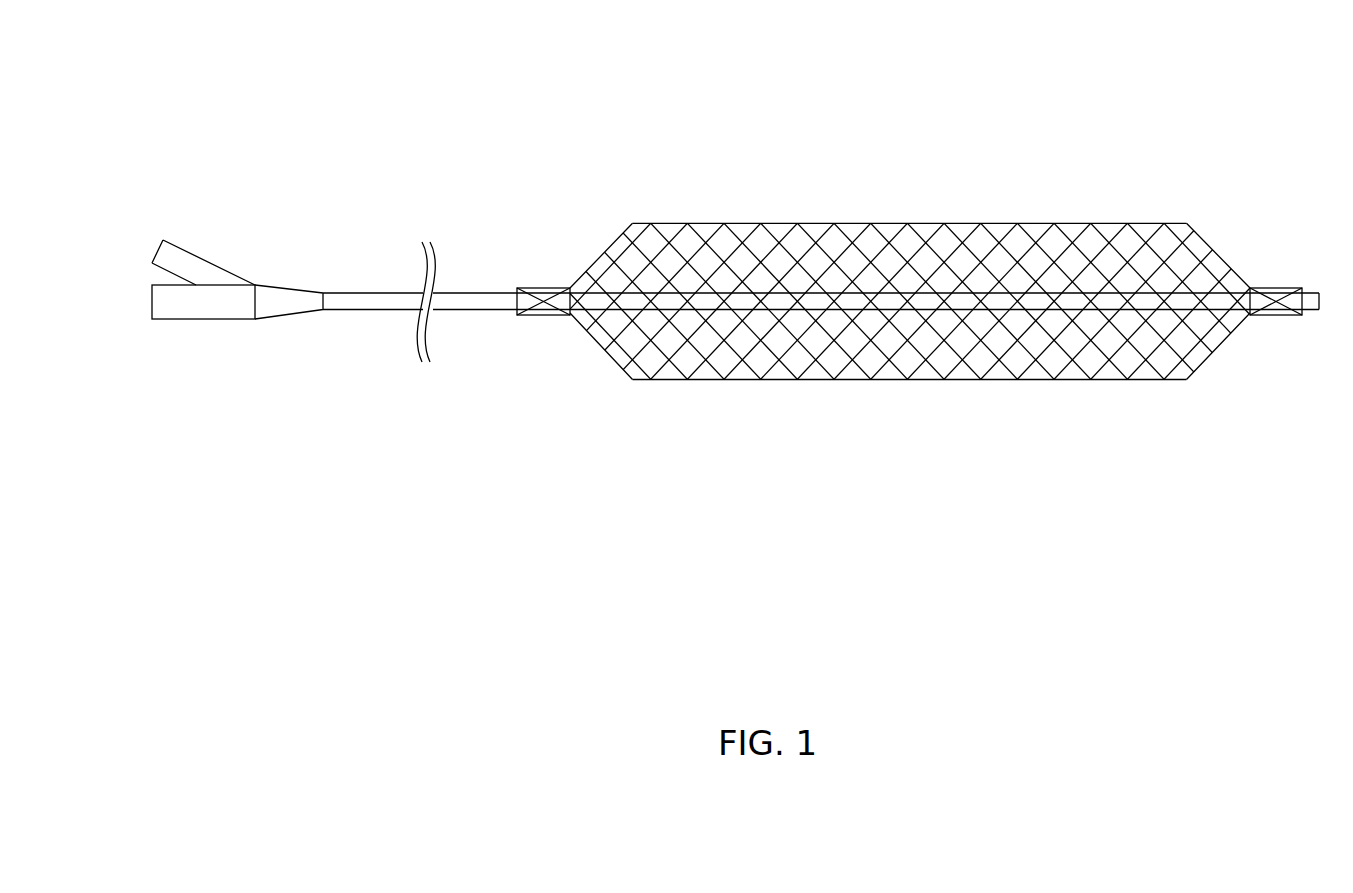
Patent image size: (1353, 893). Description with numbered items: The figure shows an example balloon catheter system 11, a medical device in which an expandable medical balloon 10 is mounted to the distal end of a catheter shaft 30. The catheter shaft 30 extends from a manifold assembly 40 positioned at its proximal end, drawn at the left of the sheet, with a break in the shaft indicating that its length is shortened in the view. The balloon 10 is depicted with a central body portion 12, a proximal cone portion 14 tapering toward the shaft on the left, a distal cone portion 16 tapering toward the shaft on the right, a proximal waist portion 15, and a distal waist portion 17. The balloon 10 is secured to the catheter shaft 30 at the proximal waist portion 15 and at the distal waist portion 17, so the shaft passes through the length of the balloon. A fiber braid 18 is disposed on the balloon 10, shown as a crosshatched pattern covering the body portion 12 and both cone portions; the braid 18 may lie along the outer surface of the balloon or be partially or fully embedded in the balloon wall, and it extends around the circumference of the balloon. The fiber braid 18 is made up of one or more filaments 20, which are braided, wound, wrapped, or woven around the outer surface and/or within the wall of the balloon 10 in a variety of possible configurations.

The expandable medical balloon 10 is at (1005, 163).
The balloon catheter system 11 is at (563, 115).
The body portion 12 is at (1093, 223).
The proximal cone portion 14 is at (607, 255).
The proximal waist portion 15 is at (543, 318).
The distal cone portion 16 is at (1217, 343).
The distal waist portion 17 is at (1267, 287).
The fiber braid 18 is at (817, 220).
The filaments 20 is at (1183, 247).
The catheter shaft 30 is at (372, 310).
The manifold assembly 40 is at (203, 320).